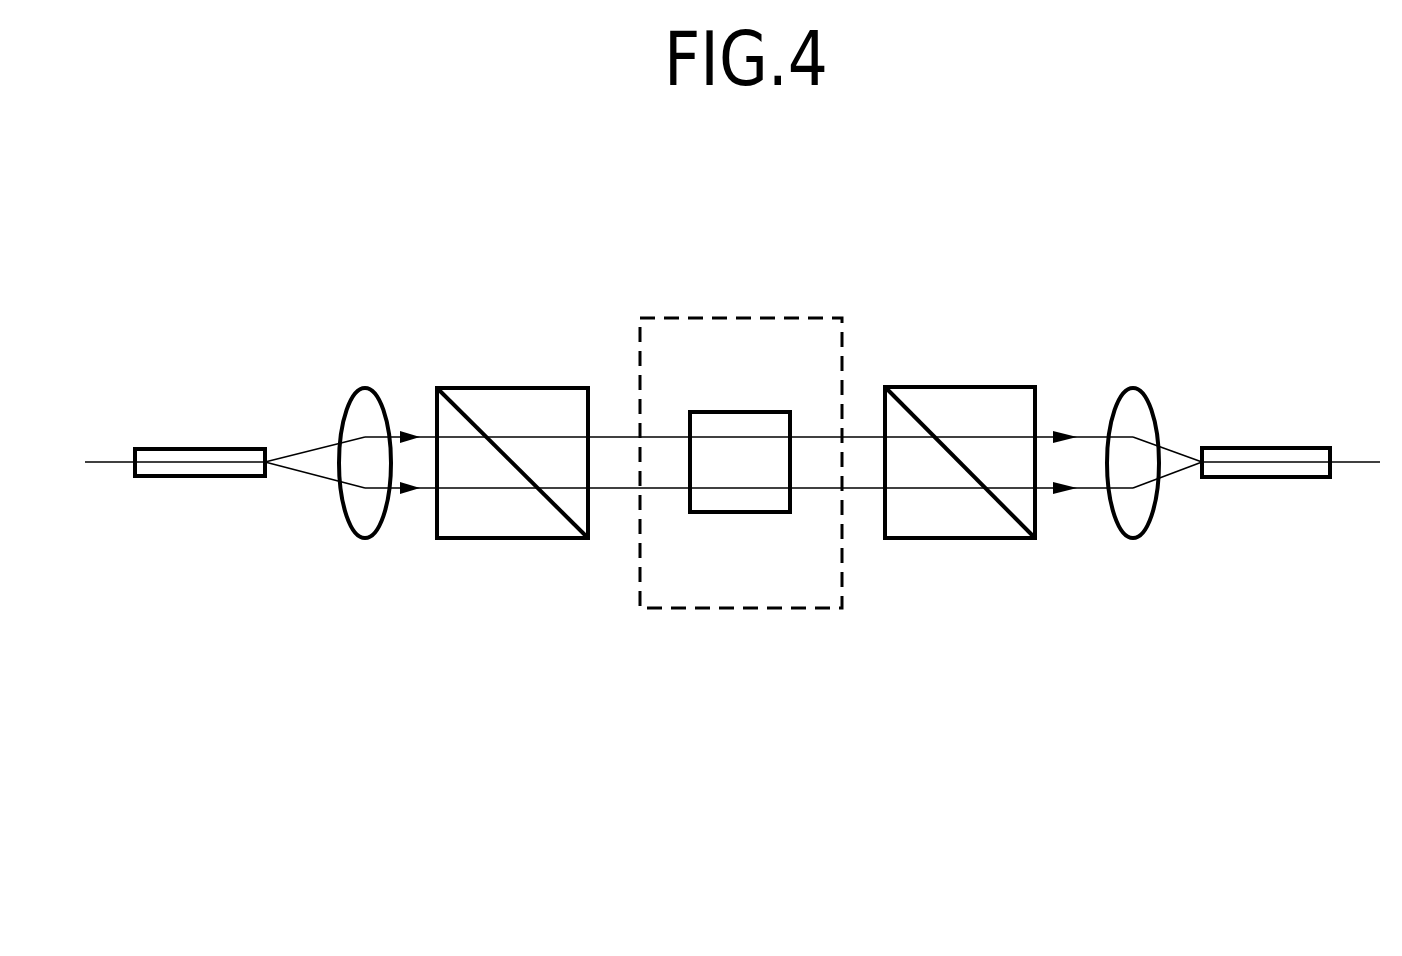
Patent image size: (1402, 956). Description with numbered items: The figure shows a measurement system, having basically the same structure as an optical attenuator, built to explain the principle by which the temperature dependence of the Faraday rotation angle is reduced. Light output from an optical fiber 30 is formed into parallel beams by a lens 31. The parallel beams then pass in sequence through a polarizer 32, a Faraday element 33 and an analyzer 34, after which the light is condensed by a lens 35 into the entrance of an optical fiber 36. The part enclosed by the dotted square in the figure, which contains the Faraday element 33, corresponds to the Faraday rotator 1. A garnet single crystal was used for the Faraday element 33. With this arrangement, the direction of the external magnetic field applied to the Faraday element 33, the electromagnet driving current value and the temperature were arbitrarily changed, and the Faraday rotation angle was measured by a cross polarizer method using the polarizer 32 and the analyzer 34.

The Faraday rotator 1 is at (741, 318).
The optical fiber 30 is at (193, 477).
The lens 31 is at (365, 388).
The polarizer 32 is at (513, 388).
The Faraday element 33 is at (738, 512).
The analyzer 34 is at (967, 387).
The lens 35 is at (1133, 388).
The optical fiber 36 is at (1267, 477).